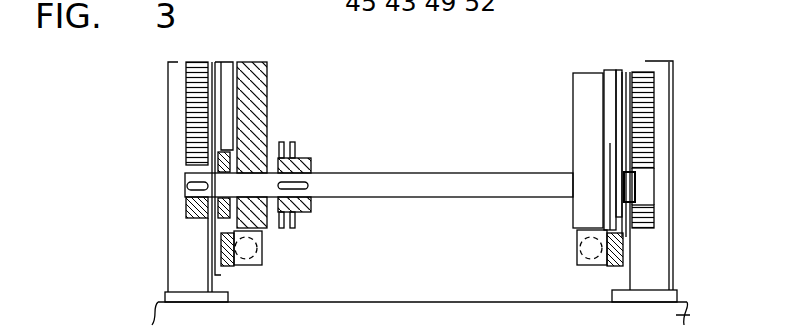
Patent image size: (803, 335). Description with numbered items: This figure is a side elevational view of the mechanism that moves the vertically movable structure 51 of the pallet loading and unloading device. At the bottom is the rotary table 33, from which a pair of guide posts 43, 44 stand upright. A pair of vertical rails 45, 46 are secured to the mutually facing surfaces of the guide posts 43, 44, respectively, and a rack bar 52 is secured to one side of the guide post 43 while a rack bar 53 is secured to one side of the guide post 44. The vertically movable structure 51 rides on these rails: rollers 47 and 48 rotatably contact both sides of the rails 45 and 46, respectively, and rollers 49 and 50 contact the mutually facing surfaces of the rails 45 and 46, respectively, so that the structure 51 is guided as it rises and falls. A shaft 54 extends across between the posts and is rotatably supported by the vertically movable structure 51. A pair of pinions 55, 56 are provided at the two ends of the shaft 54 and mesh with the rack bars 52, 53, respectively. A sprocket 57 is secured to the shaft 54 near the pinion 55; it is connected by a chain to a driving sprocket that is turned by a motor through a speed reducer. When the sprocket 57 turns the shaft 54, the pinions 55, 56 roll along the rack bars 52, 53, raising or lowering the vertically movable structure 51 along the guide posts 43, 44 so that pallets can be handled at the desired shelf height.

The rotary table 33 is at (690, 312).
The guide post 43 is at (185, 248).
The guide post 44 is at (665, 246).
The vertical rail 45 is at (222, 66).
The vertical rail 46 is at (617, 86).
The roller 47 is at (232, 268).
The roller 48 is at (615, 268).
The roller 49 is at (258, 248).
The roller 50 is at (575, 247).
The vertically movable structure 51 is at (258, 82).
The rack bar 52 is at (186, 110).
The rack bar 53 is at (650, 115).
The shaft 54 is at (428, 186).
The pinion 55 is at (190, 208).
The pinion 56 is at (645, 192).
The sprocket 57 is at (295, 142).